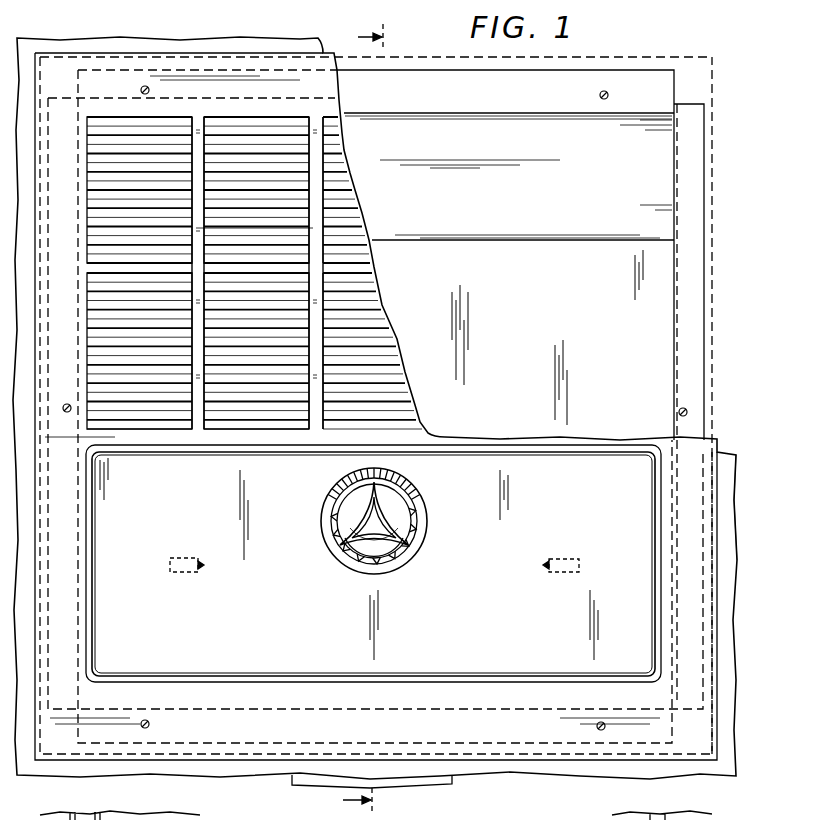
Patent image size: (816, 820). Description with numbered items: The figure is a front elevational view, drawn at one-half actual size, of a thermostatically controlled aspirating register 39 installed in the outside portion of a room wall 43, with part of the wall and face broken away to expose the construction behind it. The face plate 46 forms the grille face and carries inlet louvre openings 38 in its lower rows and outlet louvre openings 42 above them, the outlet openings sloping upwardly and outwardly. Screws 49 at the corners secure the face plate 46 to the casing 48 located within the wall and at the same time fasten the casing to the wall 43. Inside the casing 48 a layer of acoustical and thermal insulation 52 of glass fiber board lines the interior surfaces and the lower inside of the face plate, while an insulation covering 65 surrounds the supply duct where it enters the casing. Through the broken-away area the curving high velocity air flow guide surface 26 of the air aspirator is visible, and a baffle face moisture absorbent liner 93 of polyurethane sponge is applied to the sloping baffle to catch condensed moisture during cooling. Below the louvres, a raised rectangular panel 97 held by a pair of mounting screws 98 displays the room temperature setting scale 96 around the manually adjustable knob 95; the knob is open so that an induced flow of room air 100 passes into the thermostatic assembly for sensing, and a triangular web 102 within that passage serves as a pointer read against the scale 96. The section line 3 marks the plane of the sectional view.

The section line 3- 3 is at (371, 419).
The curving high velocity air flow guide surface 26 is at (652, 338).
The inlet louvre openings 38 is at (95, 364).
The aspirating register 39 is at (722, 193).
The outlet louvre openings 42 is at (103, 186).
The room wall 43 is at (174, 40).
The face plate 46 is at (137, 397).
The casing 48 is at (704, 246).
The screws 49 is at (149, 88).
The layer of acoustical and thermal insulation 52 is at (108, 819).
The insulation covering 65 is at (446, 786).
The baffle face moisture absorbent liner 93 is at (660, 152).
The manually adjustable knob 95 is at (408, 552).
The room temperature setting scale 96 is at (427, 493).
The raised rectangular panel 97 is at (423, 665).
The mounting screws 98 is at (200, 556).
The induced flow of room air 100 is at (356, 512).
The triangular web 102 is at (340, 548).